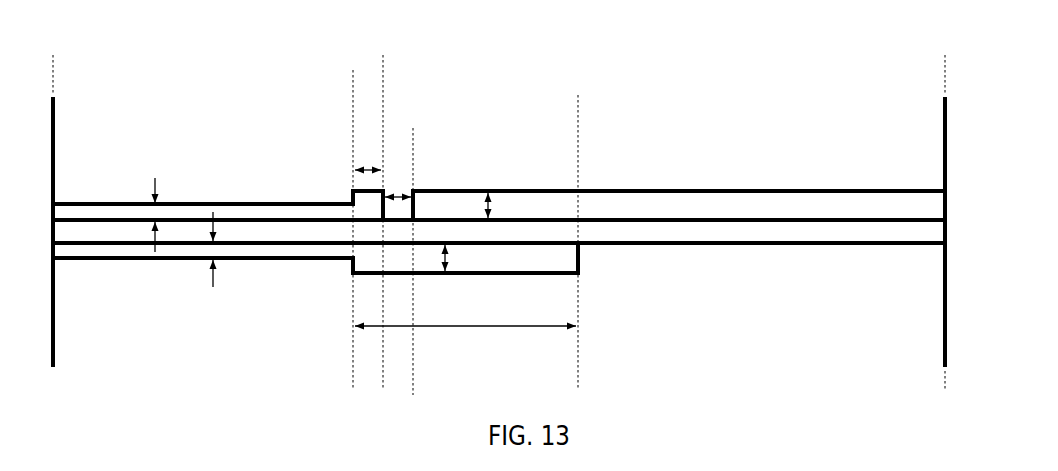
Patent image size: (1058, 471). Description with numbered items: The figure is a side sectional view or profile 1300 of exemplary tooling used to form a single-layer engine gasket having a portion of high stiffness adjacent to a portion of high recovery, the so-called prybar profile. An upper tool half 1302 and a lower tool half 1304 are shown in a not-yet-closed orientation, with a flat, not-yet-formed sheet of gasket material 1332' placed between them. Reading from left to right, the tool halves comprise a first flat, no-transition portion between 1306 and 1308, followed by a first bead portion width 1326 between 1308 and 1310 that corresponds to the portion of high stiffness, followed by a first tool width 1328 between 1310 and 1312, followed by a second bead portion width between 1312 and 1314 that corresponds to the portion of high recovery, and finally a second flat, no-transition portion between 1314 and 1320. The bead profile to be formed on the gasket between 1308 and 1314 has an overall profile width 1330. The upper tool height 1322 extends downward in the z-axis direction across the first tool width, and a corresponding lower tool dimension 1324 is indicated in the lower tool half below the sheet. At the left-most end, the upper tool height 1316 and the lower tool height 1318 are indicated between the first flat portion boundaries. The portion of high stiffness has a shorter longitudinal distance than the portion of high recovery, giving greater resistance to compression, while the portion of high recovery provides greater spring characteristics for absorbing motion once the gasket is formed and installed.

The side sectional view or profile 1300 is at (742, 58).
The upper tool half 1302 is at (920, 168).
The lower tool half 1304 is at (925, 284).
The first flat portion start 1306 is at (55, 82).
The first bead portion start 1308 is at (352, 96).
The first tool width start 1310 is at (384, 84).
The second bead portion start 1312 is at (414, 128).
The second flat portion start 1314 is at (580, 118).
The upper tool height at first end 1316 is at (155, 178).
The lower tool height at first end 1318 is at (213, 287).
The second flat portion end 1320 is at (944, 388).
The upper tool height 1322 is at (492, 203).
The lower recess depth dimension 1324 is at (450, 268).
The first bead portion width 1326 is at (365, 168).
The first tool width 1328 is at (395, 195).
The profile width 1330 is at (468, 330).
The gasket material 1332' is at (499, 281).